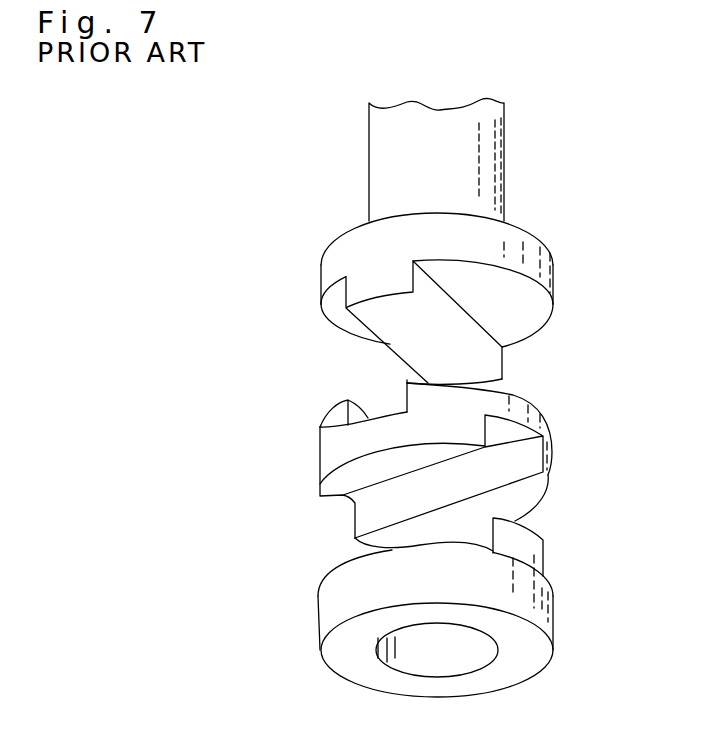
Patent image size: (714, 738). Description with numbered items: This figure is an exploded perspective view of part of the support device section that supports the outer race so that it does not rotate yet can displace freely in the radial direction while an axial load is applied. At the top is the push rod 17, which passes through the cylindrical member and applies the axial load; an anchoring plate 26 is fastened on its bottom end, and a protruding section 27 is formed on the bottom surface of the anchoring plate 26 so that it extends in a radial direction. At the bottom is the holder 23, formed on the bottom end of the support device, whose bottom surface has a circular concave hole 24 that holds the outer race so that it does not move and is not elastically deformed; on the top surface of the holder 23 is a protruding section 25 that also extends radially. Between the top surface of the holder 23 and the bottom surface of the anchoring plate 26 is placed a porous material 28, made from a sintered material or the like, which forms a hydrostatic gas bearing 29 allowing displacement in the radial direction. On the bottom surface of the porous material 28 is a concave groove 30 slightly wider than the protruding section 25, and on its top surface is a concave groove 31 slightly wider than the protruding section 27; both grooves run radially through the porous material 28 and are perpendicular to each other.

The push rod 17 is at (492, 153).
The anchoring plate 26 is at (512, 234).
The protruding section 27 is at (493, 357).
The hydrostatic gas bearing 29 is at (555, 298).
The porous material 28 is at (337, 455).
The concave groove 30 is at (505, 430).
The concave groove 31 is at (320, 427).
The protruding section 25 is at (530, 545).
The holder 23 is at (525, 658).
The circular concave hole 24 is at (417, 662).